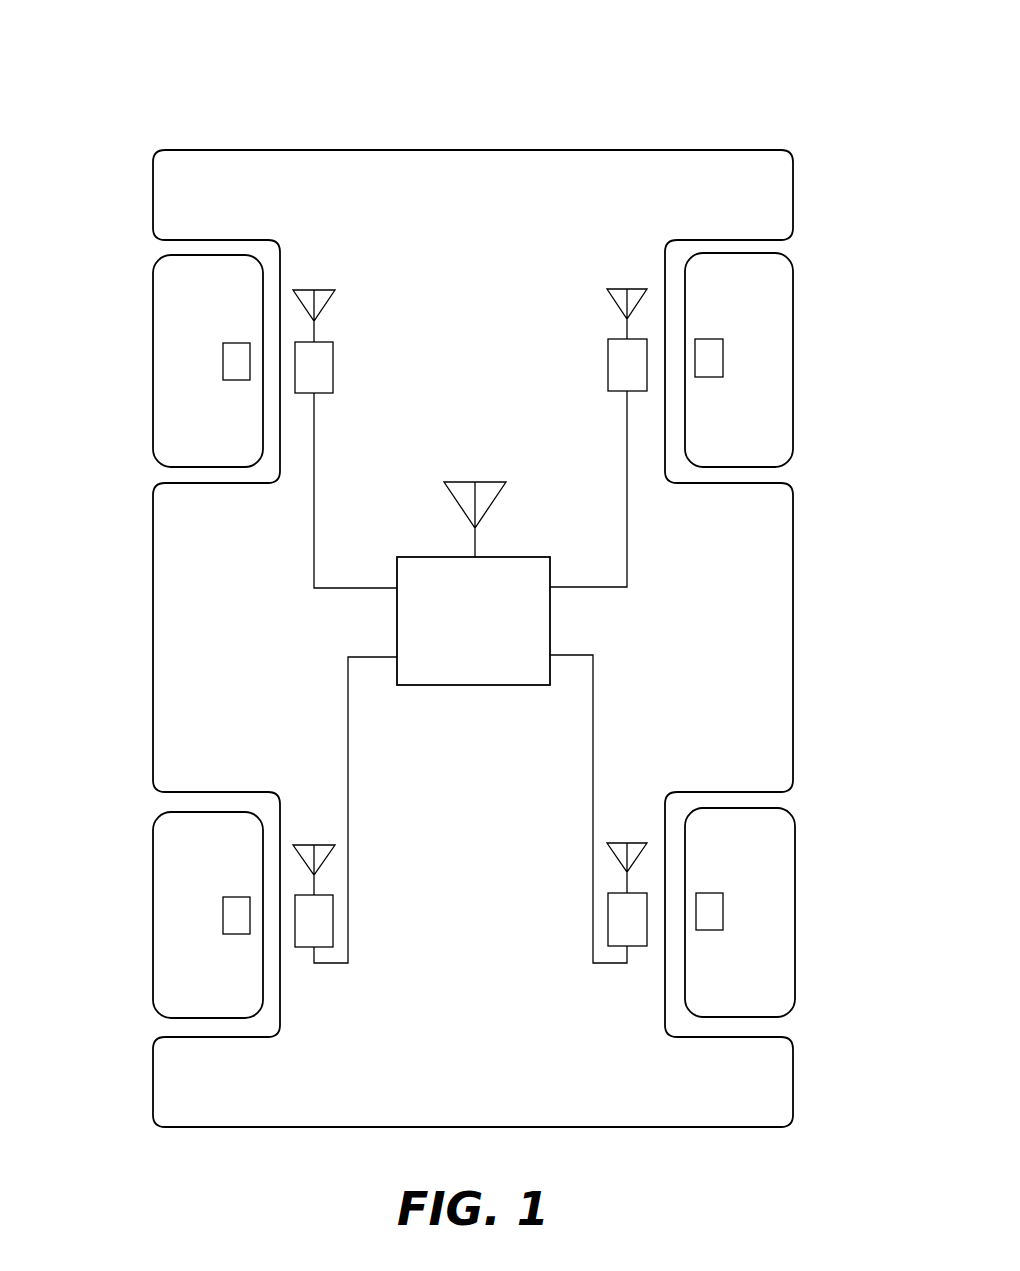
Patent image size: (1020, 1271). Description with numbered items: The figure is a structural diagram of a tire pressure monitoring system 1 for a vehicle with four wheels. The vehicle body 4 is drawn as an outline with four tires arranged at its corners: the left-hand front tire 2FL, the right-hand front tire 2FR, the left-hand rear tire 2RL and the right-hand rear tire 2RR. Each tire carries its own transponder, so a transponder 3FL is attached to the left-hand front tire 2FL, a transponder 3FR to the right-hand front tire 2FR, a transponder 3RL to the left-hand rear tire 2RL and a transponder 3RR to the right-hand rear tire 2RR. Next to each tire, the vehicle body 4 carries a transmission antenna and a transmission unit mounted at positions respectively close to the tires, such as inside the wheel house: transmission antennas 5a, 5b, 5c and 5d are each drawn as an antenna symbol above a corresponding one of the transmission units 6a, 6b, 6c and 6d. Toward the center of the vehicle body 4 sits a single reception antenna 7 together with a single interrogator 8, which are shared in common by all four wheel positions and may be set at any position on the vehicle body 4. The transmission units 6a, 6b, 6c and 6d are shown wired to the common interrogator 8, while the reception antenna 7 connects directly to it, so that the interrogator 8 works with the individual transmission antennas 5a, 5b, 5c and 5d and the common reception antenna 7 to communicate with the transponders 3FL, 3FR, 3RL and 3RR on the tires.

The tire pressure monitoring system 1 is at (583, 114).
The vehicle body 4 is at (793, 620).
The left-hand front tire 2FL is at (153, 350).
The right-hand front tire 2FR is at (793, 347).
The left-hand rear tire 2RL is at (153, 908).
The right-hand rear tire 2RR is at (795, 902).
The transponder 3FL is at (238, 380).
The transponder 3FR is at (708, 377).
The transponder 3RL is at (237, 934).
The transponder 3RR is at (706, 930).
The transmission antenna 5a is at (321, 290).
The transmission antenna 5b is at (619, 289).
The transmission antenna 5c is at (322, 845).
The transmission antenna 5d is at (618, 843).
The transmission unit 6a is at (333, 365).
The transmission unit 6b is at (608, 360).
The transmission unit 6c is at (305, 947).
The transmission unit 6d is at (637, 946).
The reception antenna 7 is at (478, 482).
The interrogator 8 is at (515, 557).